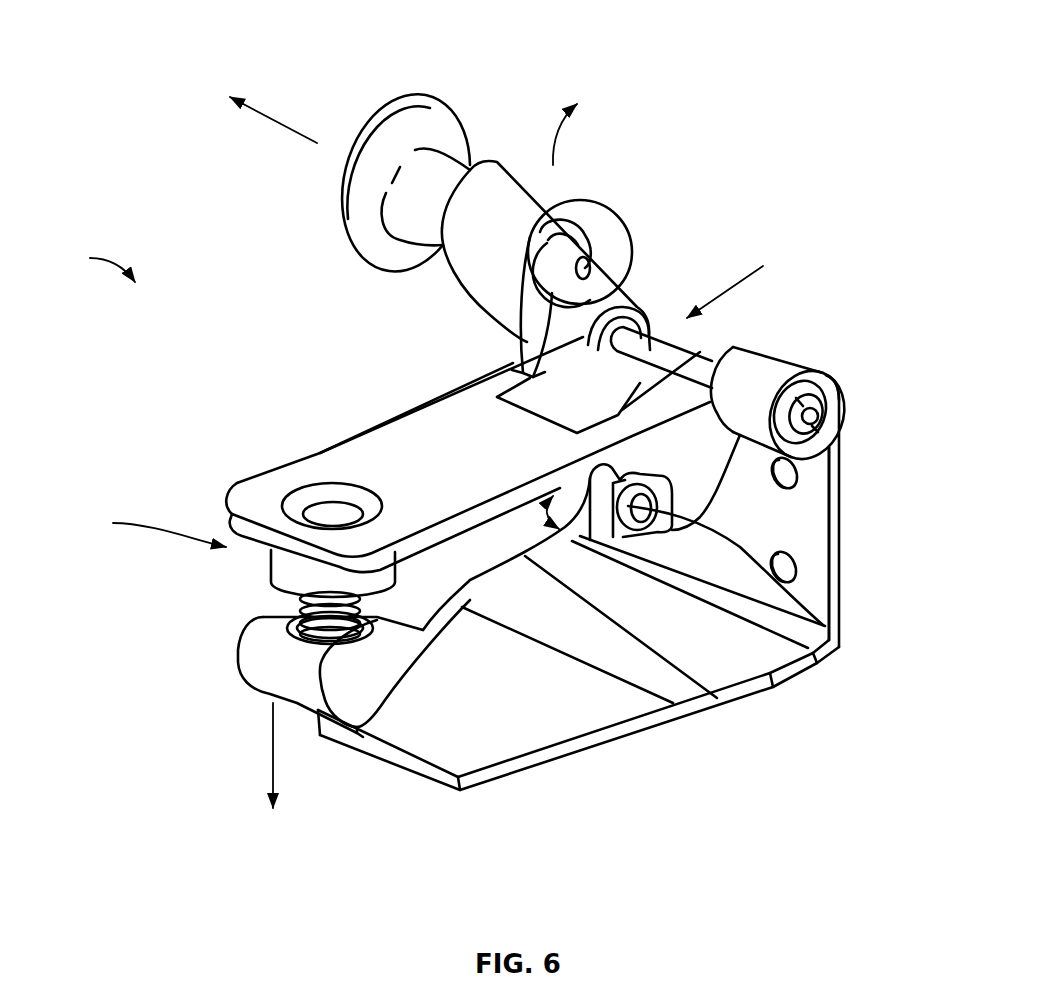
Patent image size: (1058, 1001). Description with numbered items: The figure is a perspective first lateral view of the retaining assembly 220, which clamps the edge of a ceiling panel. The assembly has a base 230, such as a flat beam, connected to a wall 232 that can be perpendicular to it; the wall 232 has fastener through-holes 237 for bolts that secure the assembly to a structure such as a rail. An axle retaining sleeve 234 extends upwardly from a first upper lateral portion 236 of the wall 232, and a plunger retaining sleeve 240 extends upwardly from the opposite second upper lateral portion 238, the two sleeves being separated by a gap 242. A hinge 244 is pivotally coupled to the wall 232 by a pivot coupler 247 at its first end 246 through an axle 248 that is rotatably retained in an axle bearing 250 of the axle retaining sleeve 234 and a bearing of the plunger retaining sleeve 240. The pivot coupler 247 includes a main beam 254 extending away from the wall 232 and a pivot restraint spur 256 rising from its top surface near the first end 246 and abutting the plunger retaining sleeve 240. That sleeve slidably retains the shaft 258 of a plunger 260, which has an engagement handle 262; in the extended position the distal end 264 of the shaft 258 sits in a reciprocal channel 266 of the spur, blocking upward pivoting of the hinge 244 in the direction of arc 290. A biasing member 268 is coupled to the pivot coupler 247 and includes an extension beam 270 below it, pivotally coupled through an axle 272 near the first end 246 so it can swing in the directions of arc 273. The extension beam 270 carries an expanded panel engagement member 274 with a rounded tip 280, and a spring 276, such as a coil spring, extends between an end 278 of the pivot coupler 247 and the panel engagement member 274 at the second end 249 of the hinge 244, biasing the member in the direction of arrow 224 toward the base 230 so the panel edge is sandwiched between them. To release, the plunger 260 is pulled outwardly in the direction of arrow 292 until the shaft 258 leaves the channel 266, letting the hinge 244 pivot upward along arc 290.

The retaining assembly 220 is at (86, 264).
The arrow 224 is at (272, 752).
The base 230 is at (592, 745).
The wall 232 is at (837, 567).
The axle retaining sleeve 234 is at (843, 380).
The first upper lateral portion 236 is at (843, 450).
The fastener through-holes 237 is at (797, 477).
The second upper lateral portion 238 is at (582, 197).
The plunger retaining sleeve 240 is at (517, 340).
The gap 242 is at (746, 286).
The hinge 244 is at (378, 422).
The first end 246 is at (727, 343).
The pivot coupler 247 is at (433, 395).
The axle 248 is at (660, 335).
The second end 249 is at (143, 530).
The axle bearing 250 is at (827, 403).
The main beam 254 is at (318, 460).
The pivot restraint spur 256 is at (594, 262).
The shaft 258 is at (597, 232).
The plunger 260 is at (431, 99).
The engagement handle 262 is at (468, 133).
The distal end 264 is at (538, 236).
The reciprocal channel 266 is at (540, 305).
The biasing member 268 is at (231, 675).
The extension beam 270 is at (723, 705).
The axle 272 is at (805, 612).
The arc 273 is at (548, 513).
The panel engagement member 274 is at (353, 722).
The spring 276 is at (297, 613).
The end 278 is at (228, 503).
The rounded tip 280 is at (350, 716).
The arc 290 is at (557, 122).
The arrow 292 is at (279, 118).